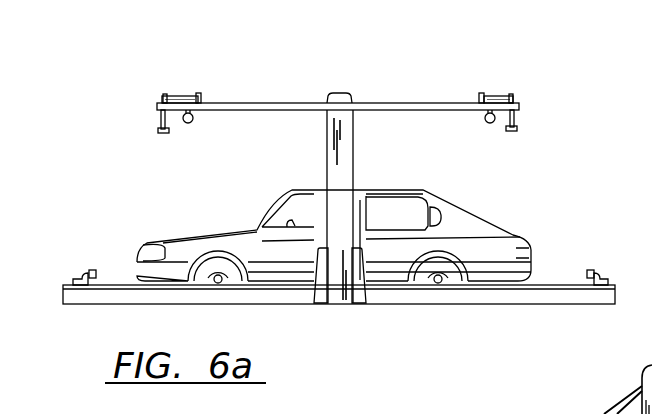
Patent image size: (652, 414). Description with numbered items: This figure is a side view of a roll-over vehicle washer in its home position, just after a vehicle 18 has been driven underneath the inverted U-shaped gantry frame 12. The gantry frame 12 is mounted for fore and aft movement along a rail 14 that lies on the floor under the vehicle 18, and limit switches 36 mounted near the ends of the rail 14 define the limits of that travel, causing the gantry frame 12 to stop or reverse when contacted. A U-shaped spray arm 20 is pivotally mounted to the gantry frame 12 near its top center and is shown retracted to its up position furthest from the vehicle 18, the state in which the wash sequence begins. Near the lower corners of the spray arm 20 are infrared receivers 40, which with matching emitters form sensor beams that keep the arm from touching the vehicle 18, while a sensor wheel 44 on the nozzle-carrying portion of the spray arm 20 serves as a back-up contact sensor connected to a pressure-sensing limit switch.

The gantry frame 12 is at (348, 306).
The rail 14 is at (555, 283).
The vehicle 18 is at (487, 217).
The front U-shaped spray arm 20 is at (384, 99).
The limit switch 36 is at (75, 277).
The receiver 40 is at (192, 95).
The sensor wheel 44 is at (191, 130).